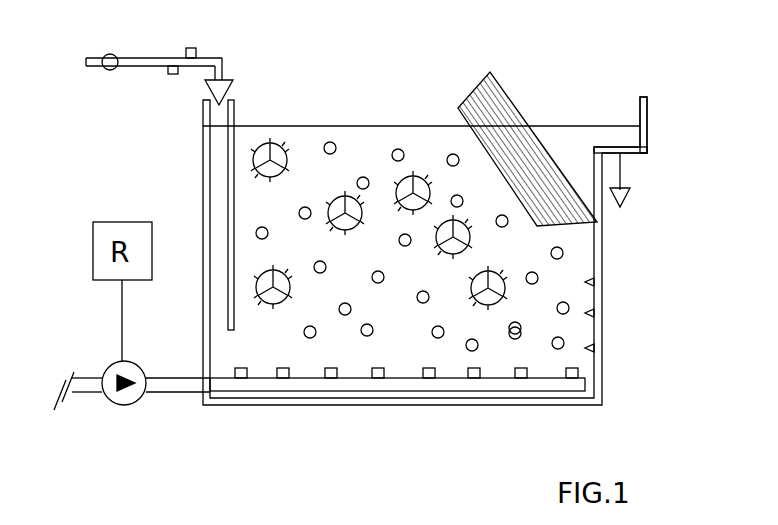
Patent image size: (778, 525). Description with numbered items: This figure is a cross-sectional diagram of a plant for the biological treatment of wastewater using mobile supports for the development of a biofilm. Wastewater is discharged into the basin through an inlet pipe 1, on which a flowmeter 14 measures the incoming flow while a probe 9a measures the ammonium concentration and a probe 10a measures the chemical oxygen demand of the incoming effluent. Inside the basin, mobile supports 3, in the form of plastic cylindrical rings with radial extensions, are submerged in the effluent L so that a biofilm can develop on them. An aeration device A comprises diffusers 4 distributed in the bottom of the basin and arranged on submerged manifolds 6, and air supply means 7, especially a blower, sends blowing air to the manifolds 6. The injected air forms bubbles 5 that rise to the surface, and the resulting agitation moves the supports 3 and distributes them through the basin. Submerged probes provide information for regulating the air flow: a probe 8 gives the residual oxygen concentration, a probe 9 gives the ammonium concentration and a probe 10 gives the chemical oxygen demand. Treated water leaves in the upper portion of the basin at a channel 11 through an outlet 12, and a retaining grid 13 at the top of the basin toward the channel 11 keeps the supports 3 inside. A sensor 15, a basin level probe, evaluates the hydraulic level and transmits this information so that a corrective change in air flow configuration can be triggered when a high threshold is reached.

The pipe 1 is at (90, 60).
The flowmeter 14 is at (111, 54).
The probe for measuring the COD 10a is at (198, 36).
The probe for measuring the concentration of ammonium 9a is at (168, 74).
The sensor 15 is at (636, 110).
The channel 11 is at (650, 136).
The outlet 12 is at (632, 176).
The grid 13 is at (514, 106).
The effluent L is at (357, 143).
The bubbles 5 is at (398, 149).
The mobile supports 3 is at (415, 176).
The probe 8 is at (603, 275).
The probe 9 is at (603, 316).
The probe 10 is at (603, 354).
The air supply means 7 is at (124, 405).
The aeration device A is at (183, 398).
The manifolds 6 is at (355, 390).
The diffusers 4 is at (446, 378).